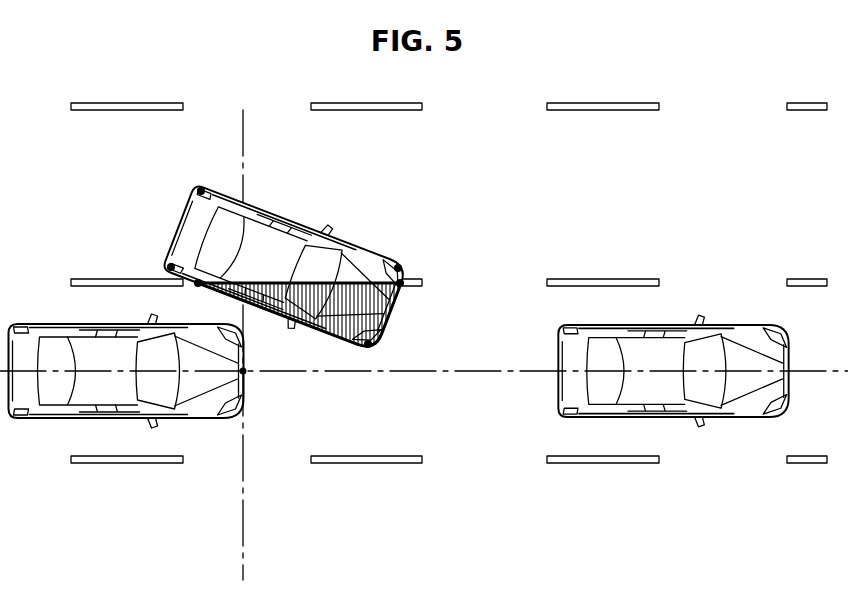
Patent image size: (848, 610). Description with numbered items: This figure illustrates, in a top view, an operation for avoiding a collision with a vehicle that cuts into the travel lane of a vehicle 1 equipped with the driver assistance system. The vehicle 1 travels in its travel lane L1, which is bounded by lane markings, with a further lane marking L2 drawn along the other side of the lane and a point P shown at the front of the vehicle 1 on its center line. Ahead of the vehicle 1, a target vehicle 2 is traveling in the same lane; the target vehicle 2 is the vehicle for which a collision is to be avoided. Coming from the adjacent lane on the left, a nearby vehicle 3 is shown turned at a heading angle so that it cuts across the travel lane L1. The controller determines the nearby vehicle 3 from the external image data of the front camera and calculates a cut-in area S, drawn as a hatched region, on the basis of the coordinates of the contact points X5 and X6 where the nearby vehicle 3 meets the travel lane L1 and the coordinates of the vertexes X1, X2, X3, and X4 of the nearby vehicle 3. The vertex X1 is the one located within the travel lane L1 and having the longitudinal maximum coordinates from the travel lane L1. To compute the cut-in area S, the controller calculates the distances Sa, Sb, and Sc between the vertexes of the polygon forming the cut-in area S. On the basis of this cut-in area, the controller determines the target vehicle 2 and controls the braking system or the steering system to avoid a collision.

The vehicle 1 is at (66, 324).
The target vehicle 2 is at (728, 324).
The nearby vehicle 3 is at (300, 216).
The travel lane L1 is at (84, 279).
The right lane marking L2 is at (87, 463).
The reference point of host vehicle P is at (245, 370).
The cut-in area S is at (376, 308).
The distance between vertexes of the polygon Sa is at (307, 327).
The distance between vertexes of the polygon Sb is at (386, 328).
The distance between vertexes of the polygon Sc is at (349, 281).
The vertex X1 is at (366, 350).
The vertex X2 is at (400, 265).
The vertex X3 is at (199, 189).
The vertex X4 is at (168, 265).
The contact point X5 is at (196, 285).
The contact point X6 is at (404, 283).